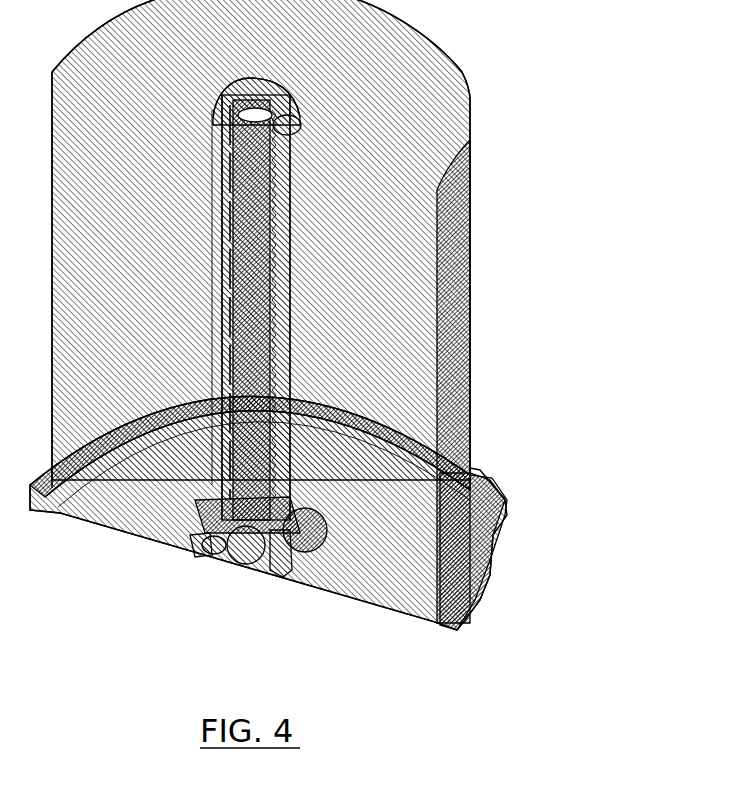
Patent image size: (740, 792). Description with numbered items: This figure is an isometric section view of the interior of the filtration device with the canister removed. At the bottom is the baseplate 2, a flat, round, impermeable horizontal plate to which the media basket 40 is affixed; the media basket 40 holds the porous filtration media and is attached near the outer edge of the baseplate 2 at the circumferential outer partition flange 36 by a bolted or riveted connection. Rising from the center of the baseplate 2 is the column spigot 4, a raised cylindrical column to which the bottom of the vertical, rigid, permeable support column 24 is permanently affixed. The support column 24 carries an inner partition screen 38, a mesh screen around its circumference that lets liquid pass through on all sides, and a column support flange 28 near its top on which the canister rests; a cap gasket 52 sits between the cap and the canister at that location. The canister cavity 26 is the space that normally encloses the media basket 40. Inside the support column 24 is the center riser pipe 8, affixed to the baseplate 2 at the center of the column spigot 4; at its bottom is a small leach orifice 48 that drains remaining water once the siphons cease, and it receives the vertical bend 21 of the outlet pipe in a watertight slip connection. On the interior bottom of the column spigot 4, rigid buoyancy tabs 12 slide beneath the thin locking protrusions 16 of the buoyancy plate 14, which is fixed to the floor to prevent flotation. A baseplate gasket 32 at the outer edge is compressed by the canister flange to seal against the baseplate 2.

The baseplate 2 is at (349, 562).
The column spigot 4 is at (305, 537).
The center riser pipe 8 is at (264, 106).
The buoyancy tab 12 is at (282, 575).
The buoyancy plate 14 is at (225, 560).
The locking protrusion 16 is at (200, 557).
The vertical bend 21 is at (242, 563).
The support column 24 is at (286, 318).
The cavity 26 is at (168, 338).
The column support flange 28 is at (213, 122).
The baseplate gasket 32 is at (440, 630).
The outer partition flange 36 is at (63, 488).
The inner partition screen 38 is at (228, 232).
The media basket 40 is at (476, 252).
The leach orifice 48 is at (263, 497).
The cap gasket 52 is at (292, 122).